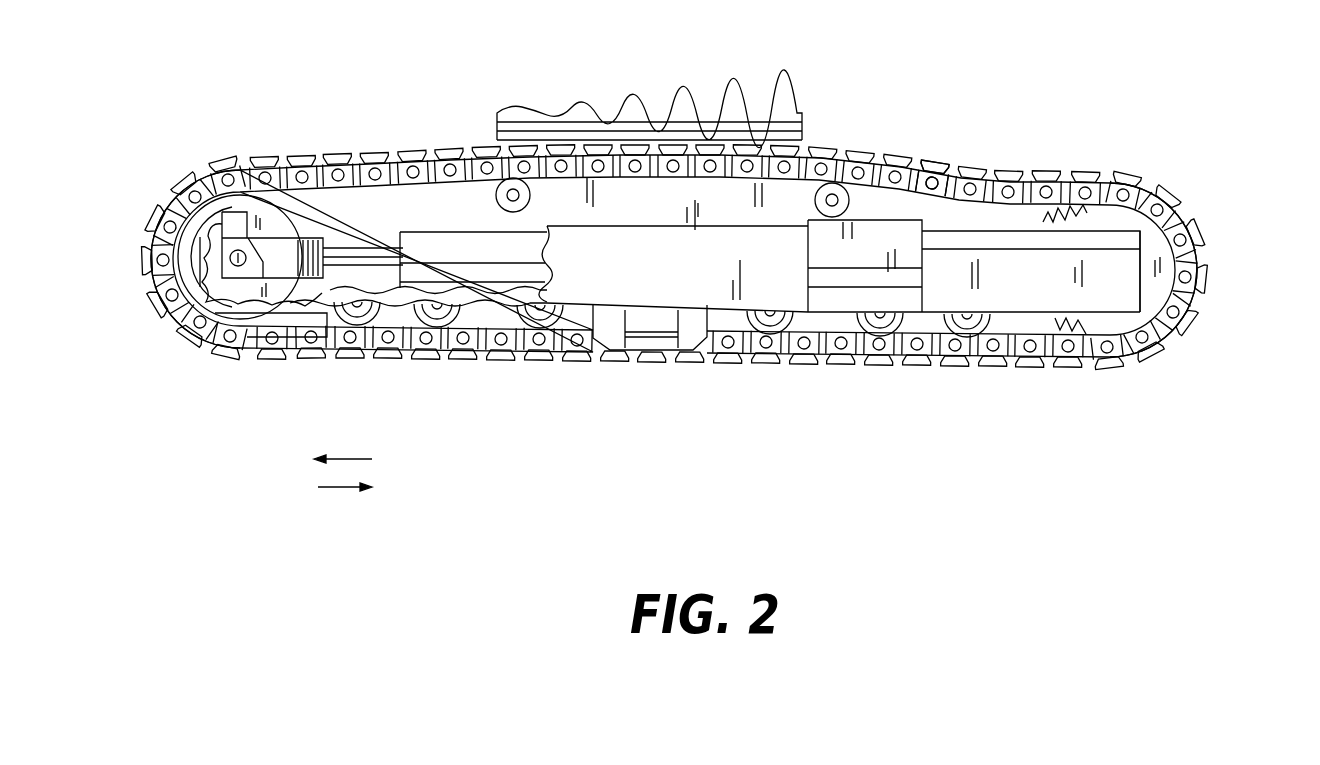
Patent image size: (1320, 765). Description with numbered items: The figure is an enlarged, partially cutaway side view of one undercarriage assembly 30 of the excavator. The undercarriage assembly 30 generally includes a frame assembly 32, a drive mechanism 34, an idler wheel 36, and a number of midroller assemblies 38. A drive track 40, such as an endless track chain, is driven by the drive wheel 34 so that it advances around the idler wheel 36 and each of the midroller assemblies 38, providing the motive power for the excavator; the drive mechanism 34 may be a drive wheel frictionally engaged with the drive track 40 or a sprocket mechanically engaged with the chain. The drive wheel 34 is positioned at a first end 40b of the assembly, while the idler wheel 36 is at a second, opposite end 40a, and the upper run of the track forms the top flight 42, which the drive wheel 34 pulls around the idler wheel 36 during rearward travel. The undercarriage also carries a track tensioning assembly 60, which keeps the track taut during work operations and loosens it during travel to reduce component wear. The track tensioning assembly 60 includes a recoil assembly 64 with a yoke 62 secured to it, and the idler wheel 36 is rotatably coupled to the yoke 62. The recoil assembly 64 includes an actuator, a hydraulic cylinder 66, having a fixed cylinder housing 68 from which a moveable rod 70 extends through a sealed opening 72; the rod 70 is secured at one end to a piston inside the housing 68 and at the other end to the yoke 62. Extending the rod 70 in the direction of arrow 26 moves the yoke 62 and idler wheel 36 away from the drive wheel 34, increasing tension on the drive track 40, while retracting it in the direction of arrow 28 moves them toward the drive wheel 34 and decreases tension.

The arrow 26 is at (346, 456).
The arrow 28 is at (321, 490).
The undercarriage assembly 30 is at (1050, 88).
The frame assembly 32 is at (697, 290).
The drive mechanism 34 is at (1117, 326).
The idler wheel 36 is at (244, 212).
The midroller assemblies 38 is at (833, 186).
The drive track 40 is at (1208, 249).
The second end 40a is at (125, 258).
The first end 40b is at (1224, 313).
The top flight 42 is at (947, 168).
The track tensioning assembly 60 is at (538, 212).
The yoke 62 is at (277, 266).
The recoil assembly 64 is at (420, 247).
The hydraulic cylinder 66 is at (388, 240).
The cylinder housing 68 is at (468, 253).
The rod 70 is at (358, 246).
The sealed opening 72 is at (400, 283).